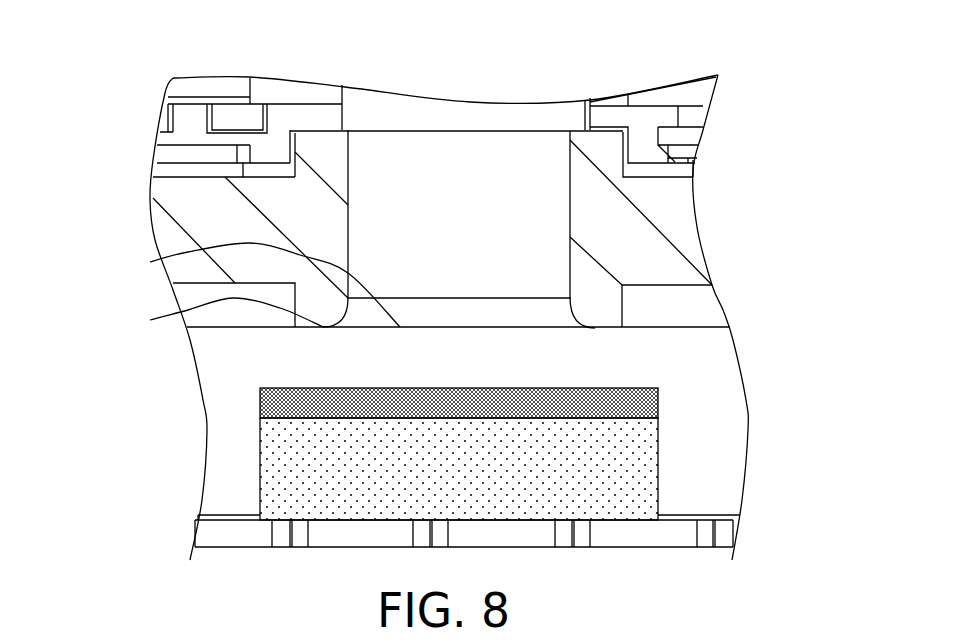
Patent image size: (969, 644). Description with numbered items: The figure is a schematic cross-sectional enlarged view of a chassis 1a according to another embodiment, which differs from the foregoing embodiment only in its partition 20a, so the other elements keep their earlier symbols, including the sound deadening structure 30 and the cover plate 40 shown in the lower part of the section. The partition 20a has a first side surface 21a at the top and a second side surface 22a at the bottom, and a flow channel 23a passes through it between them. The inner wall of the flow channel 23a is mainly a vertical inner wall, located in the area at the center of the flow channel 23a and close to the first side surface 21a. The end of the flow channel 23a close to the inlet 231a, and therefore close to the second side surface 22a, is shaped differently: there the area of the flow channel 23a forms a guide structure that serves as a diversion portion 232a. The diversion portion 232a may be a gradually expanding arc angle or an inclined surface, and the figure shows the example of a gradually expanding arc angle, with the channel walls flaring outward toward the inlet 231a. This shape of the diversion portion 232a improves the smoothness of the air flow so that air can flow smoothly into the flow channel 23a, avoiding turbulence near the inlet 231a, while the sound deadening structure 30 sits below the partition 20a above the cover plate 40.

The chassis 1a is at (123, 60).
The partition 20a is at (683, 237).
The first side surface 21a is at (575, 130).
The second side surface 22a is at (622, 327).
The flow channel 23a is at (450, 130).
The inlet 231a is at (150, 262).
The diversion portion 232a is at (150, 320).
The sound deadening structure 30 is at (293, 477).
The cover plate 40 is at (717, 535).